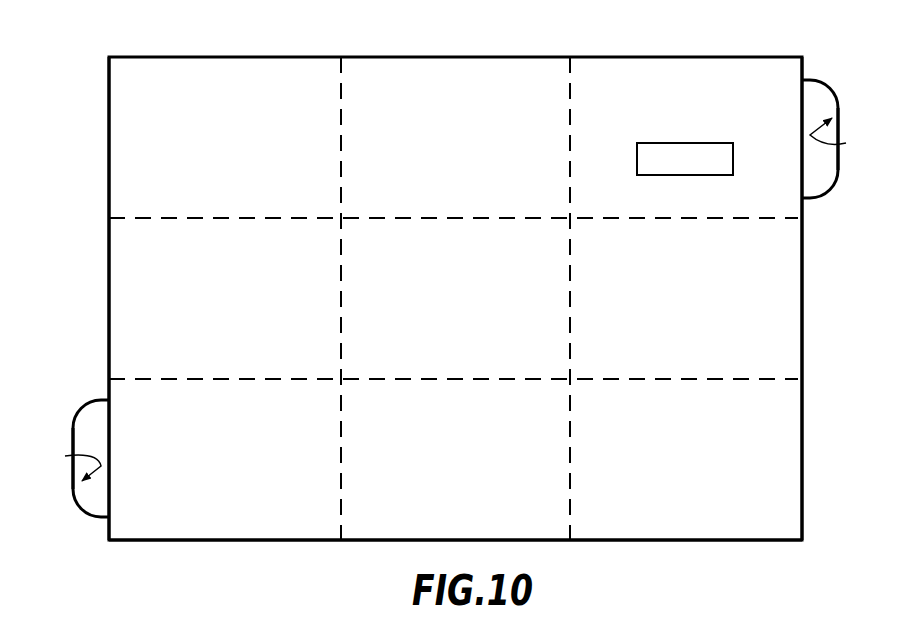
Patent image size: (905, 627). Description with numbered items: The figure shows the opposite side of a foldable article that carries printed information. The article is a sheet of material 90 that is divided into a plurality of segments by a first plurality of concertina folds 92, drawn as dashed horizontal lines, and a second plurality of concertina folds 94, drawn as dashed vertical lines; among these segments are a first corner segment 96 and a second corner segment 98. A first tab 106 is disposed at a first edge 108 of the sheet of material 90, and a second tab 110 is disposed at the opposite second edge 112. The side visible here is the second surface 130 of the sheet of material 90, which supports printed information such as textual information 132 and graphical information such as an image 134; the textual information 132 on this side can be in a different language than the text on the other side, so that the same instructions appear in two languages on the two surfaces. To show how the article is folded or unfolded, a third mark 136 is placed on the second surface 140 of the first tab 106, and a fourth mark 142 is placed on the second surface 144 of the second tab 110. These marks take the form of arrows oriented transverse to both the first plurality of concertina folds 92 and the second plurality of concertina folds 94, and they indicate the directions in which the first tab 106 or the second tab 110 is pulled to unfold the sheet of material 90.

The sheet of material 90 is at (707, 541).
The first plurality of concertina folds 92 is at (770, 219).
The second plurality of concertina folds 94 is at (340, 511).
The first corner segment 96 is at (205, 513).
The second corner segment 98 is at (768, 72).
The first tab 106 is at (91, 518).
The first edge 108 is at (109, 132).
The second tab 110 is at (823, 81).
The second edge 112 is at (803, 447).
The second surface 130 is at (125, 306).
The textual information 132 is at (622, 80).
The image 134 is at (719, 143).
The third mark 136 is at (68, 460).
The second surface of the first tab 140 is at (91, 420).
The fourth mark 142 is at (842, 138).
The second surface of the second tab 144 is at (836, 178).